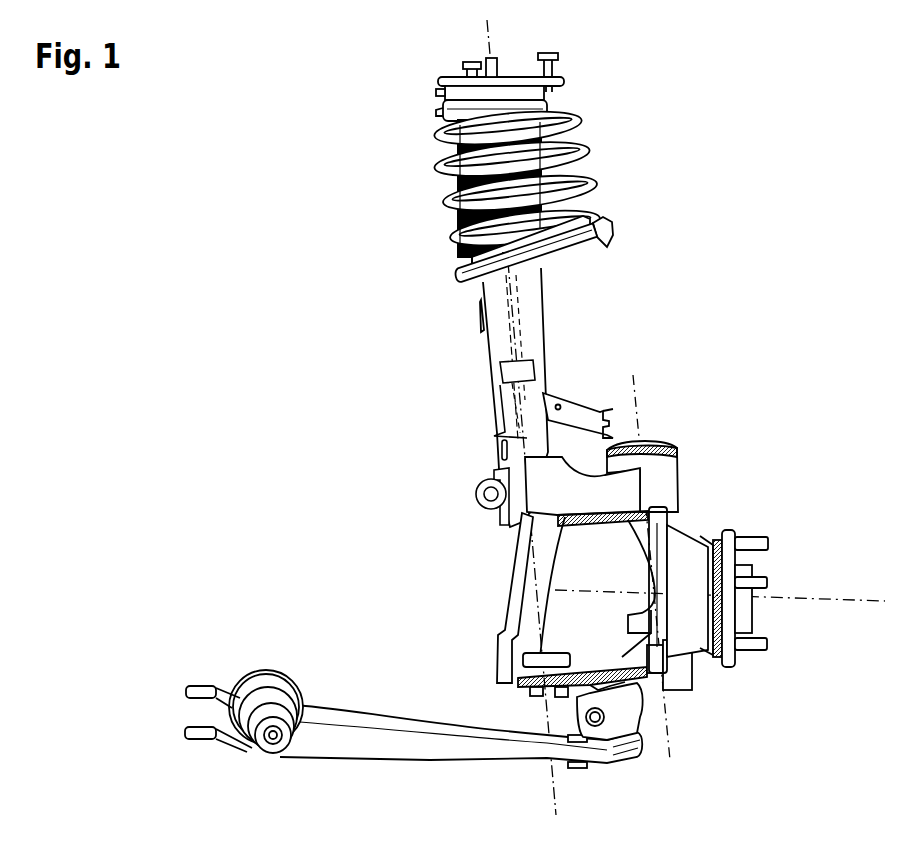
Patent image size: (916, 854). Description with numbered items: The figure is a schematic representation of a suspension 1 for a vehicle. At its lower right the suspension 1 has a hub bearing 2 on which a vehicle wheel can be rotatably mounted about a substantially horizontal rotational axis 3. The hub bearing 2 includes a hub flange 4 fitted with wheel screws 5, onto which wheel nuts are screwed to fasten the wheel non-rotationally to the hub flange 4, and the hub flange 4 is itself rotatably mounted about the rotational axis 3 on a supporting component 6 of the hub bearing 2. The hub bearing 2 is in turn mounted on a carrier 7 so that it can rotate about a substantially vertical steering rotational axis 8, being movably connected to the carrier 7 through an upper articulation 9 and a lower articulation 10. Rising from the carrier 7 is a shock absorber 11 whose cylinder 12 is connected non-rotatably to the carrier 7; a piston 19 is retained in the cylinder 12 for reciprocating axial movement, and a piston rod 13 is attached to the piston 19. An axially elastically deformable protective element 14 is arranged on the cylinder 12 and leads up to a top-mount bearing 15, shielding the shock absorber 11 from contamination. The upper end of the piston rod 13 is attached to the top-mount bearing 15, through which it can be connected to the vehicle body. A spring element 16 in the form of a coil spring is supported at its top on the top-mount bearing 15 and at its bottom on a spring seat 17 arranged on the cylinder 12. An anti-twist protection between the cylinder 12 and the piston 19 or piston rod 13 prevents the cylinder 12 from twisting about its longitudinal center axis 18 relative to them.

The suspension 1 is at (769, 348).
The hub bearing 2 is at (692, 531).
The rotational axis 3 is at (845, 604).
The hub flange 4 is at (763, 563).
The wheel screws 5 is at (769, 547).
The supporting component 6 is at (697, 633).
The carrier 7 is at (518, 572).
The steering rotational axis 8 is at (640, 388).
The upper articulation 9 is at (668, 462).
The lower articulation 10 is at (670, 688).
The shock absorber 11 is at (487, 340).
The cylinder 12 is at (503, 388).
The piston rod 13 is at (486, 54).
The protective element 14 is at (464, 177).
The top-mount bearing 15 is at (441, 107).
The spring element 16 is at (597, 156).
The spring seat 17 is at (607, 241).
The longitudinal center axis 18 is at (517, 435).
The piston 19 is at (527, 370).